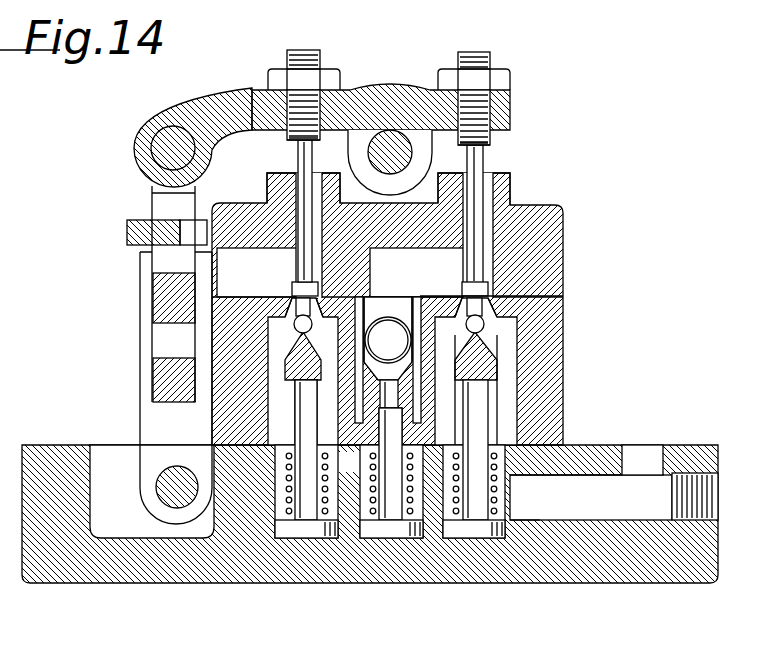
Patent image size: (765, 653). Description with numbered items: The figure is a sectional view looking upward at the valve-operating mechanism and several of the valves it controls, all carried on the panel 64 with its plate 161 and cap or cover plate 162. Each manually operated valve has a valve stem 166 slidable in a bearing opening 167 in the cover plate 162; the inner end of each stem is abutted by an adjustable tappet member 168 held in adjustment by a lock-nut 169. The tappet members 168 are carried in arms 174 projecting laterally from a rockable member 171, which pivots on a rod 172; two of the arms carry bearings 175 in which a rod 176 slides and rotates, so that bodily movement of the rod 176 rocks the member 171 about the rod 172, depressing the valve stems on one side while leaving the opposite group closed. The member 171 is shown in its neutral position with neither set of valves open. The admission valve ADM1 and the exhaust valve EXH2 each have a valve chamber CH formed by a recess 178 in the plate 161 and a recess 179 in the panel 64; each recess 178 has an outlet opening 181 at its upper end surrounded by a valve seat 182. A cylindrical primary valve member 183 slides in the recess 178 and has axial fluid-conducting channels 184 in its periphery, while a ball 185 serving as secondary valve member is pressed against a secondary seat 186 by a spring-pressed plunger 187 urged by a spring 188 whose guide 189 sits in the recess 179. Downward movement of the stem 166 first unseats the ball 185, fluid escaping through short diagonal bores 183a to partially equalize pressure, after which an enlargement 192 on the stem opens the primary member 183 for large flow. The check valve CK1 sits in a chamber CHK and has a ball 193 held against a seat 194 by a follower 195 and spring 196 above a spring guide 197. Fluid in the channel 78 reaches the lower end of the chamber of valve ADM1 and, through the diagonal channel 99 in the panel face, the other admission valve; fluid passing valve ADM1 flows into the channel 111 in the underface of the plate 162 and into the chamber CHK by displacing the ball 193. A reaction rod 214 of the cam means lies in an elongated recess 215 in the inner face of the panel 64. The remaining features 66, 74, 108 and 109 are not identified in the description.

The panel 64 is at (650, 578).
The threaded port 66 is at (722, 463).
The passage 74 is at (648, 458).
The channel 78 is at (585, 470).
The diagonal channel 99 is at (445, 492).
The passage 108 is at (356, 470).
The chamber 109 is at (258, 278).
The channel 111 is at (452, 270).
The plate 161 is at (550, 405).
The cover plate 162 is at (545, 270).
The valve stem 166 is at (298, 162).
The bearing opening 167 is at (278, 194).
The adjustable tappet member 168 is at (290, 141).
The lock-nut 169 is at (268, 76).
The rockable member 171 is at (398, 88).
The rod 172 is at (385, 154).
The arm 174 is at (262, 84).
The bearing 175 is at (205, 100).
The rod 176 is at (168, 149).
The recess 178 is at (484, 338).
The recess 179 is at (528, 476).
The outlet opening 181 is at (490, 290).
The valve seat 182 is at (490, 320).
The primary valve member 183 is at (505, 352).
The short bore 183a is at (620, 308).
The axial fluid conducting channel 184 is at (505, 375).
The ball 185 is at (288, 305).
The secondary valve seat 186 is at (294, 326).
The spring-pressed plunger 187 is at (290, 352).
The spring 188 is at (505, 504).
The guide 189 is at (305, 500).
The enlargement 192 is at (292, 289).
The ball member 193 is at (401, 349).
The seat 194 is at (386, 316).
The follower 195 is at (472, 296).
The spring 196 is at (408, 488).
The spring guide 197 is at (385, 510).
The reaction rod 214 is at (160, 487).
The elongated recess 215 is at (128, 538).
The valve chamber CH is at (275, 432).
The exhaust valve EXH2 is at (268, 402).
The admission valve ADM1 is at (520, 365).
The check valve CK1 is at (402, 275).
The check valve chamber CHK is at (430, 480).